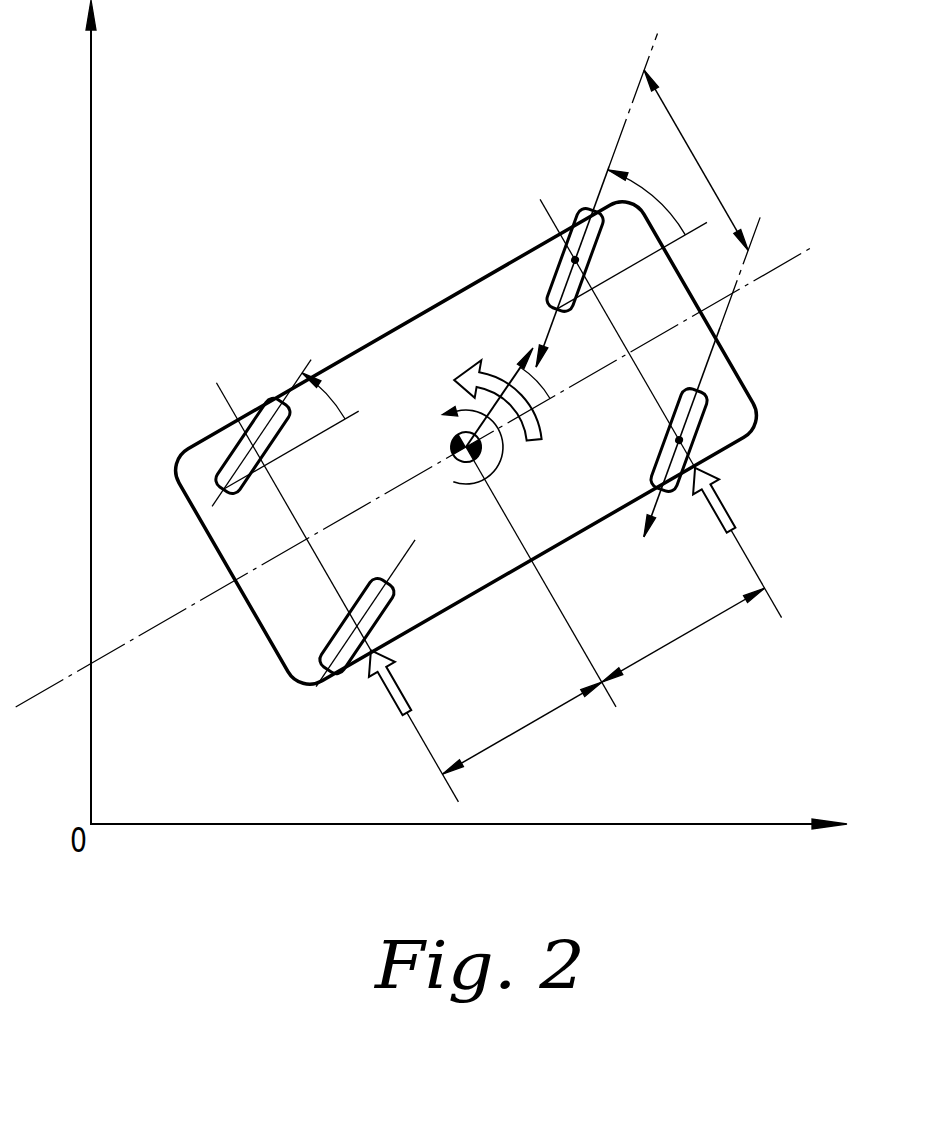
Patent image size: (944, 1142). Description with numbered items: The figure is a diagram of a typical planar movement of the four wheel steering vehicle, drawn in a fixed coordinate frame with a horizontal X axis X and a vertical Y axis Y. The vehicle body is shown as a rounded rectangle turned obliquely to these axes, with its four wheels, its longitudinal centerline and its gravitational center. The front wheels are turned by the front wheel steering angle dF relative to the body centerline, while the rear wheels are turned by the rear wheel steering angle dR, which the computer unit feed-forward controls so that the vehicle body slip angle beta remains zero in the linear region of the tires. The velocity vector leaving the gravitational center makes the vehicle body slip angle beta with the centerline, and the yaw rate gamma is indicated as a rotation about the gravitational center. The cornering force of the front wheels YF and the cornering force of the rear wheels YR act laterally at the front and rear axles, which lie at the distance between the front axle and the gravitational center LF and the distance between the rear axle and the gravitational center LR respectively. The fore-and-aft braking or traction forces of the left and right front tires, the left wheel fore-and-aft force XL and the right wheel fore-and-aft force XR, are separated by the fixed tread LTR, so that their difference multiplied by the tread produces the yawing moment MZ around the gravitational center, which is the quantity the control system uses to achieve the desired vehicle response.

The X axis X is at (472, 844).
The Y axis Y is at (72, 412).
The left wheel fore-and-aft force XL is at (558, 266).
The right wheel fore-and-aft force XR is at (682, 453).
The cornering force of the front wheels YF is at (730, 498).
The cornering force of the rear wheels YR is at (404, 681).
The tread LTR is at (696, 160).
The distance between the front axle and the gravitational center LF is at (683, 635).
The distance between the rear axle and the gravitational center LR is at (521, 728).
The front wheel steering angle dF is at (608, 224).
The rear wheel steering angle dR is at (285, 423).
The vehicle body slip angle beta is at (514, 396).
The yaw rate gamma is at (457, 441).
The yawing moment MZ is at (515, 425).